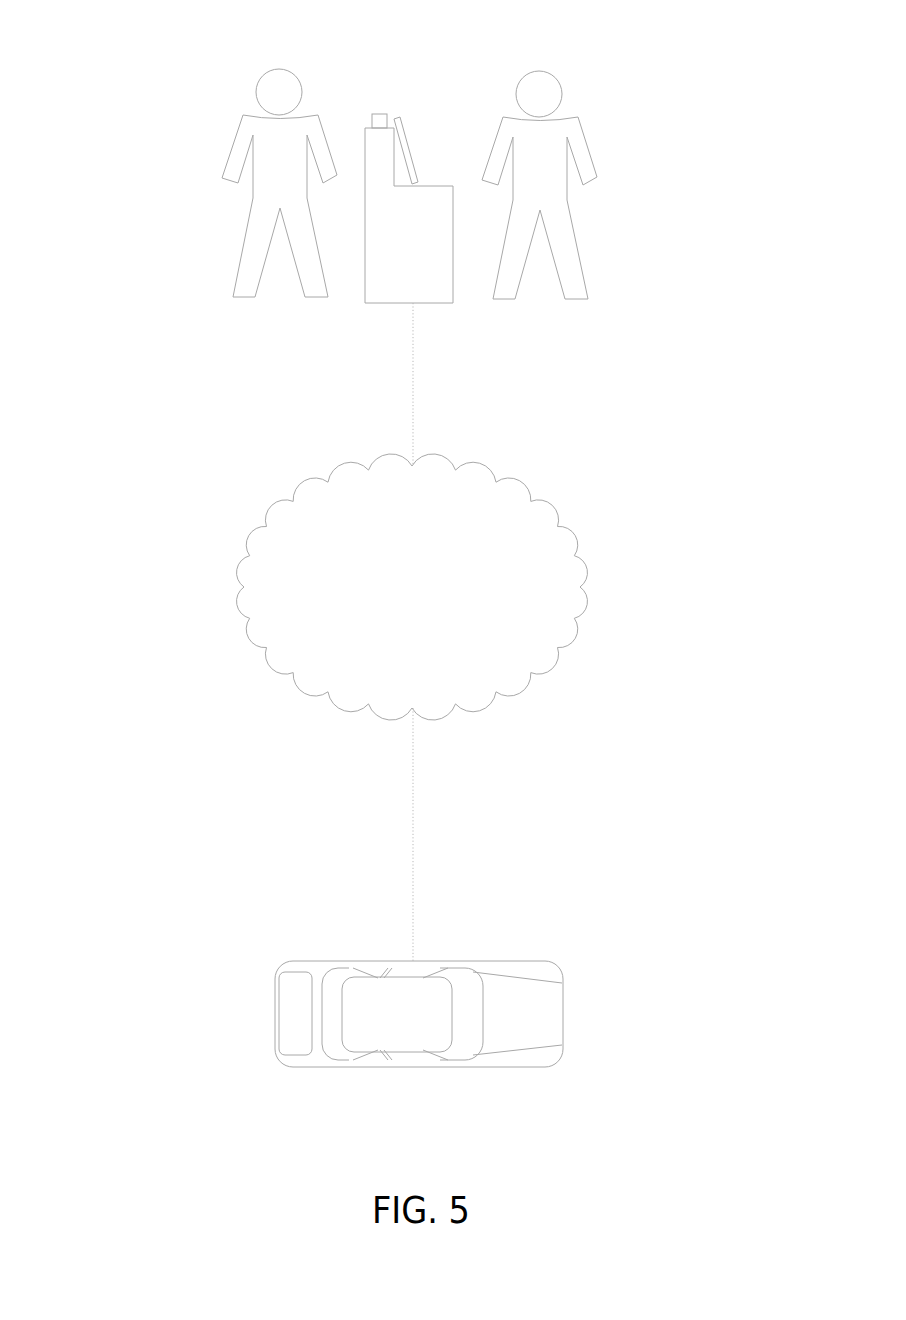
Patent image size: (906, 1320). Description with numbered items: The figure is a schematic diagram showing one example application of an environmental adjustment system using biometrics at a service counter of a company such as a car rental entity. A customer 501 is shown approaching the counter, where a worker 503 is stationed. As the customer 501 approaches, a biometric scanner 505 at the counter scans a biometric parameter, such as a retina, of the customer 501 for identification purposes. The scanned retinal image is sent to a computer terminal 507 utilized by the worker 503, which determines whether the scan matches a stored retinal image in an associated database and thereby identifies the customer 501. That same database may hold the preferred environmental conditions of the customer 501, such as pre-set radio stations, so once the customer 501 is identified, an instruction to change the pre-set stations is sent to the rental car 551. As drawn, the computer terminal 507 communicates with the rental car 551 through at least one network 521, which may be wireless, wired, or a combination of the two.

The customer 501 is at (228, 158).
The worker 503 is at (582, 145).
The biometric scanner 505 is at (372, 113).
The computer terminal 507 is at (413, 157).
The network 521 is at (434, 615).
The rental car 551 is at (422, 1027).